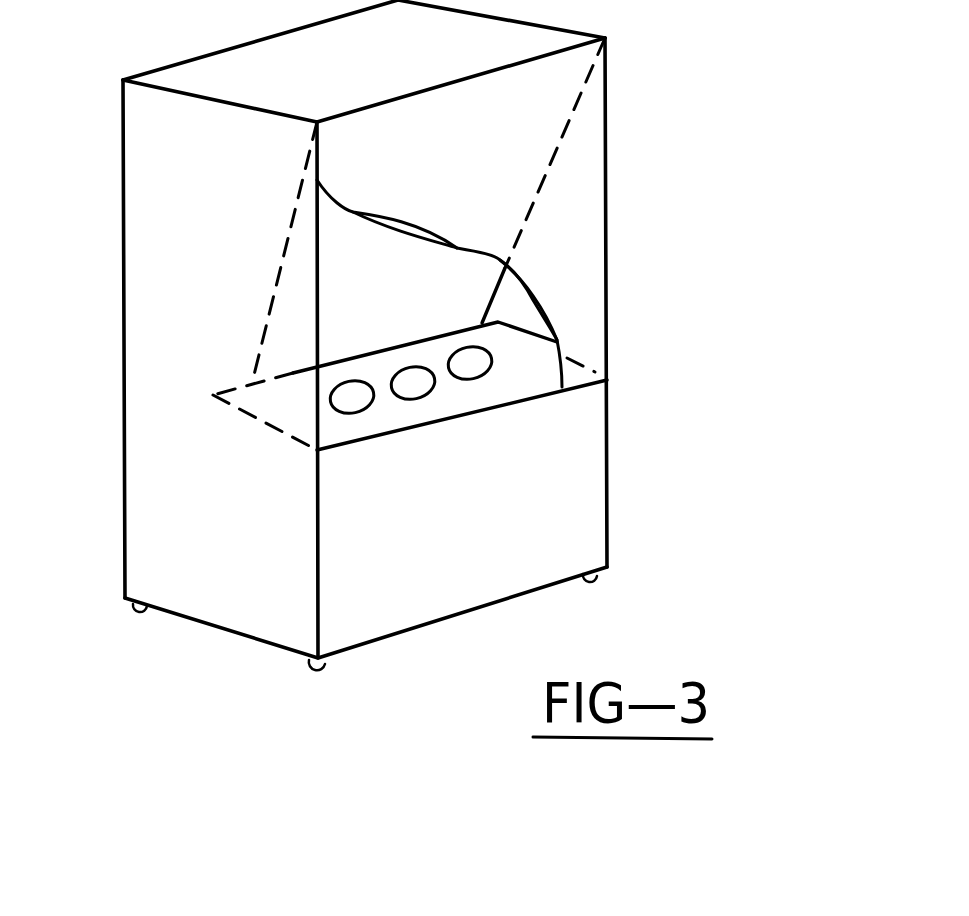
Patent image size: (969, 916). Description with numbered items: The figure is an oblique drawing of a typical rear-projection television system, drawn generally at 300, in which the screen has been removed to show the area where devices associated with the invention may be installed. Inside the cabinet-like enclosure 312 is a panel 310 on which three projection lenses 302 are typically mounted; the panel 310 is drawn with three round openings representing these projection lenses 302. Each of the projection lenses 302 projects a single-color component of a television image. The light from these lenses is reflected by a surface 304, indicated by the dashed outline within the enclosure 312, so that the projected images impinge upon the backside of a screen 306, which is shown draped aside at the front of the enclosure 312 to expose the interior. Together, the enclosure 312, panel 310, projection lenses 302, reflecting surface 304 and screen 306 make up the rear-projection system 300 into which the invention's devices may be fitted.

The rear-projection television system 300 is at (786, 243).
The projection lenses 302 is at (467, 368).
The reflecting surface 304 is at (288, 333).
The screen 306 is at (453, 250).
The panel 310 is at (520, 385).
The enclosure 312 is at (167, 160).